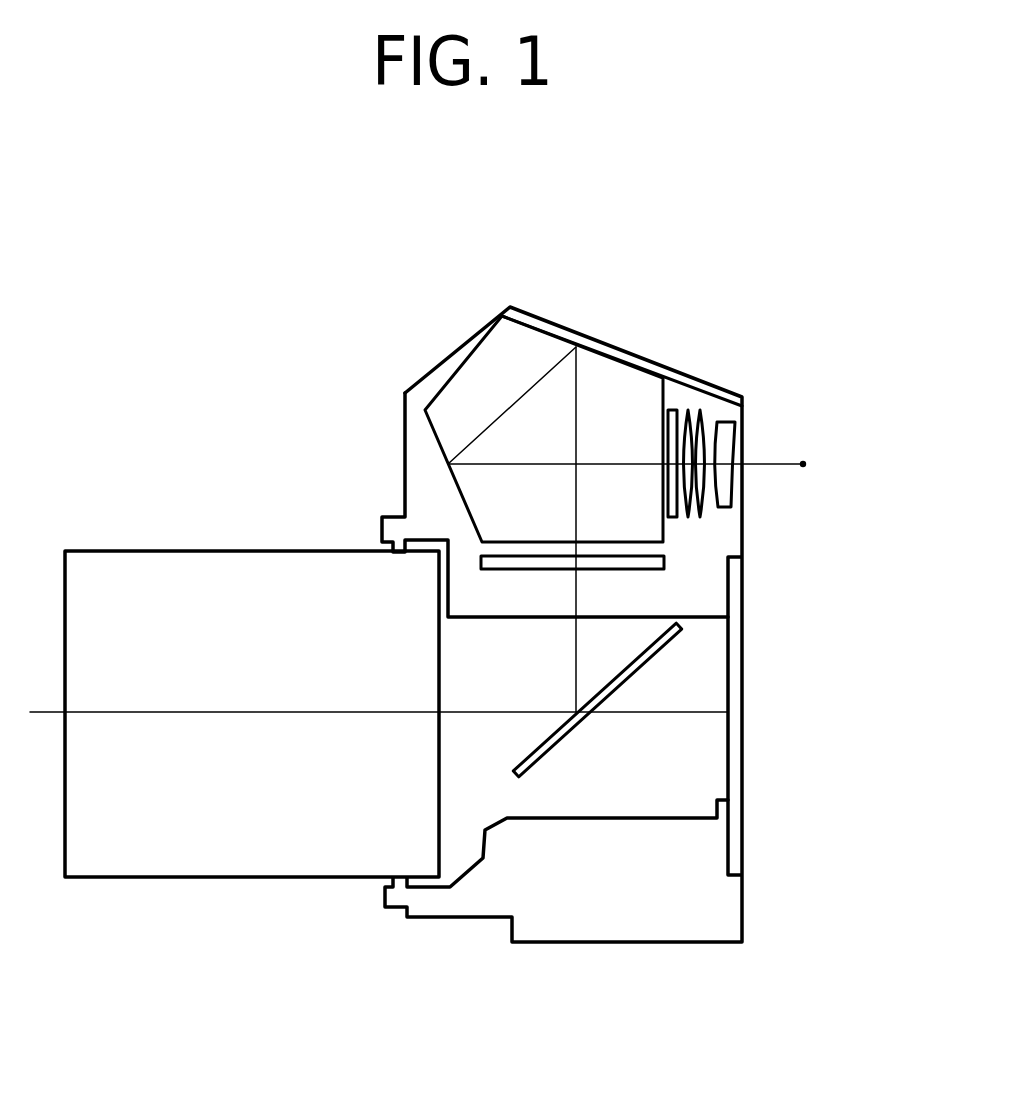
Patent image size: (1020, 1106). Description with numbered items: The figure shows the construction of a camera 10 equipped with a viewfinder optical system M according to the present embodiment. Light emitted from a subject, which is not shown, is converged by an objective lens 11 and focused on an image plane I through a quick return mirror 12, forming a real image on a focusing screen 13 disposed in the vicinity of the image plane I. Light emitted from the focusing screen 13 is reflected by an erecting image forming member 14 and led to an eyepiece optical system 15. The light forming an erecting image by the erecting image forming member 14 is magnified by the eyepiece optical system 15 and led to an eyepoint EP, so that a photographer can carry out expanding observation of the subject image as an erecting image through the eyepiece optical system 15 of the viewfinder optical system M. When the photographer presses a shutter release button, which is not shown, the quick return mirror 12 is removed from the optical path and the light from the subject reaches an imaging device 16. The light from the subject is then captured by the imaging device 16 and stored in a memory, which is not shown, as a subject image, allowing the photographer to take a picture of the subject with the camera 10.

The camera 10 is at (347, 368).
The objective lens 11 is at (147, 590).
The quick return mirror 12 is at (665, 647).
The focusing screen 13 is at (665, 560).
The erecting image forming member 14 is at (610, 380).
The eyepiece optical system 15 is at (714, 408).
The imaging device 16 is at (732, 813).
The viewfinder optical system M is at (588, 328).
The image plane I is at (633, 570).
The eyepoint EP is at (803, 464).